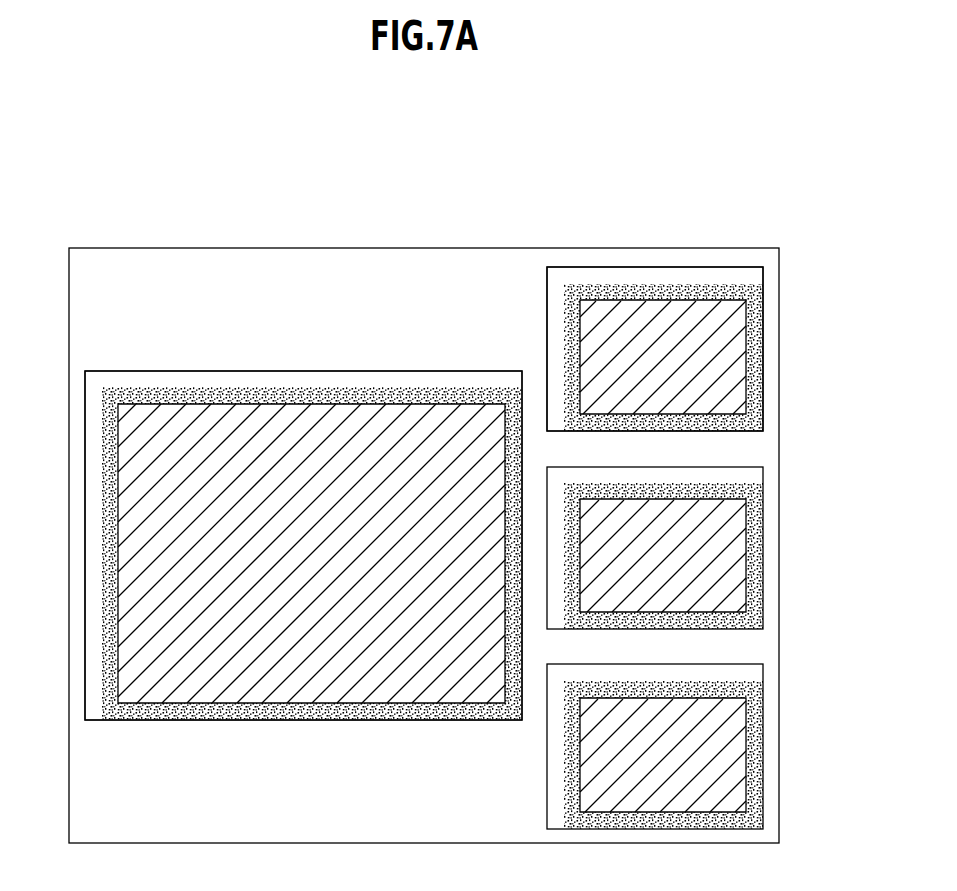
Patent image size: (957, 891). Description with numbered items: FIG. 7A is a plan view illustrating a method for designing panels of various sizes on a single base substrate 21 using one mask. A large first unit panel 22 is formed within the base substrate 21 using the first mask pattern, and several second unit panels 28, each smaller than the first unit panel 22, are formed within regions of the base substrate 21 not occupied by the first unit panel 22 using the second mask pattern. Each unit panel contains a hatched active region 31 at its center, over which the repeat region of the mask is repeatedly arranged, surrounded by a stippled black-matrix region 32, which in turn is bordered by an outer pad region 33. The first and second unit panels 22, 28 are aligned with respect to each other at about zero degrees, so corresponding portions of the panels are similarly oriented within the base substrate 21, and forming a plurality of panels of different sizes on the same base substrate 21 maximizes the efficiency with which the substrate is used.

The base substrate 21 is at (312, 268).
The first unit panel 22 is at (207, 369).
The second unit panel 28 is at (590, 268).
The active region 31 is at (463, 420).
The black-matrix region 32 is at (383, 392).
The pad region 33 is at (290, 380).